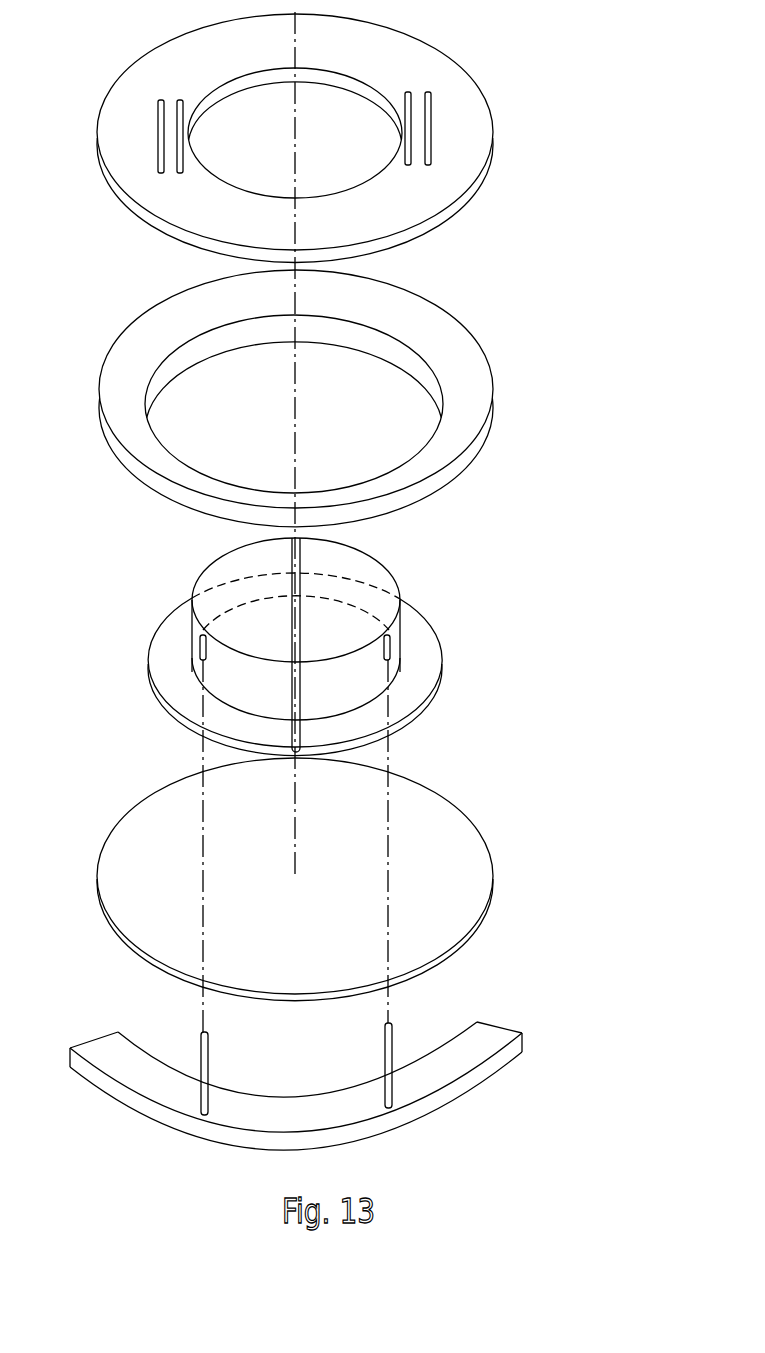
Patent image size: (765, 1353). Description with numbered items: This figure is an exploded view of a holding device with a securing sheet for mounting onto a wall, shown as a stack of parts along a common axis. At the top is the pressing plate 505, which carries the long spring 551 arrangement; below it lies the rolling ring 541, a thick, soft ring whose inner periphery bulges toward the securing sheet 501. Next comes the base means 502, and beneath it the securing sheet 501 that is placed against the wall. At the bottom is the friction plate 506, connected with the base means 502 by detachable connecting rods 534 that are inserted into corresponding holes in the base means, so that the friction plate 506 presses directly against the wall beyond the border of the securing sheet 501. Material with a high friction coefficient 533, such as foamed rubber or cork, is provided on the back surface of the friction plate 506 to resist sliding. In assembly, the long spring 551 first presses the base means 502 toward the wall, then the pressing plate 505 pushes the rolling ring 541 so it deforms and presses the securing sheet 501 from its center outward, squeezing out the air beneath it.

The securing sheet 501 is at (483, 953).
The base means 502 is at (432, 610).
The pressing plate 505 is at (387, 57).
The friction plate 506 is at (103, 1048).
The material with high friction coefficient 533 is at (286, 1062).
The connecting rods 534 is at (200, 1057).
The rolling ring 541 is at (470, 350).
The long spring 551 is at (418, 117).